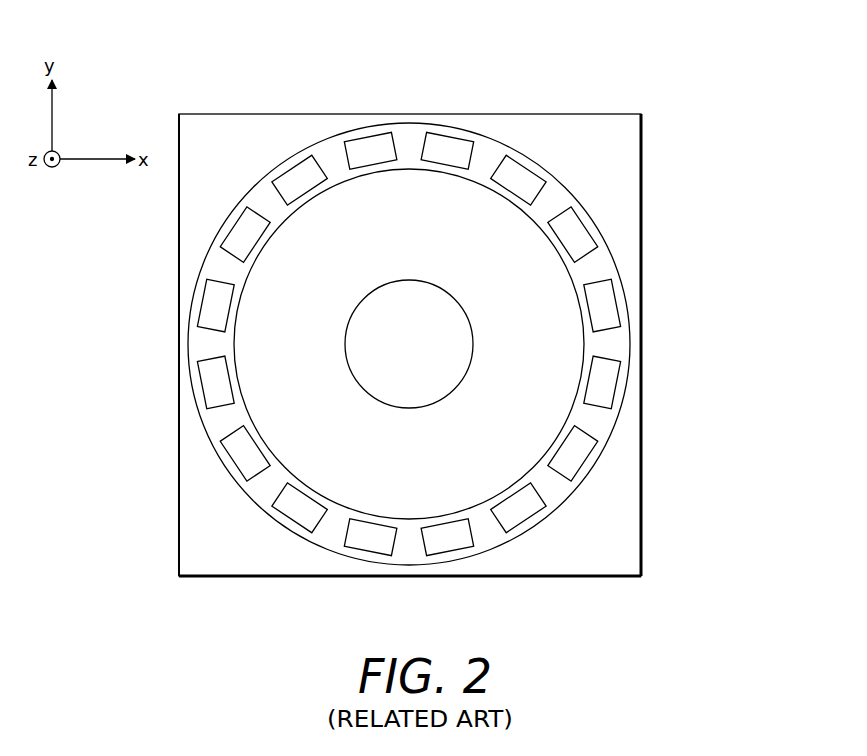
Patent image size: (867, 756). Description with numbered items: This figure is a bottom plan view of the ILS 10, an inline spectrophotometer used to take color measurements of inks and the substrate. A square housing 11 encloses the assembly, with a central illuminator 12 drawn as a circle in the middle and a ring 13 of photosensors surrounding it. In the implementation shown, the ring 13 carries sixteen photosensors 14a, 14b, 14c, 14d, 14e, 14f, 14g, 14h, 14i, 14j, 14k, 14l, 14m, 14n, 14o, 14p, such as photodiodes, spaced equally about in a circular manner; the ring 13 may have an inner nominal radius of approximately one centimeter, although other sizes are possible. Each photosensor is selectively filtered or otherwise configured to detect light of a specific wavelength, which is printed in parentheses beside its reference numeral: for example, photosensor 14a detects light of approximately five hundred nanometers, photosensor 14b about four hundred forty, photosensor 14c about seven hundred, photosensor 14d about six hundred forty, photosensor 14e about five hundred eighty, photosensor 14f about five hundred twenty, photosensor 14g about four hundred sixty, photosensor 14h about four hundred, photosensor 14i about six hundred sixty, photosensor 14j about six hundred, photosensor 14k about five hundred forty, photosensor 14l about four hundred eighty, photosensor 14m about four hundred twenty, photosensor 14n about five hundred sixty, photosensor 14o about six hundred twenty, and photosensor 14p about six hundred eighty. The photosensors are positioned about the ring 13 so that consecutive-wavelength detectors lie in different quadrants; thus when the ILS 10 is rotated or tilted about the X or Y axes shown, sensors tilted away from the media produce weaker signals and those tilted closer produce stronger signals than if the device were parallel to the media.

The ILS 10 is at (242, 46).
The housing 11 is at (621, 559).
The illuminator 12 is at (421, 359).
The ring 13 is at (559, 188).
The photosensor 14a is at (526, 171).
The photosensor 14b is at (583, 223).
The photosensor 14c is at (615, 306).
The photosensor 14d is at (615, 378).
The photosensor 14e is at (589, 452).
The photosensor 14f is at (540, 512).
The photosensor 14g is at (446, 551).
The photosensor 14h is at (374, 551).
The photosensor 14i is at (277, 517).
The photosensor 14j is at (233, 462).
The photosensor 14k is at (205, 378).
The photosensor 14l is at (205, 312).
The photosensor 14m is at (235, 229).
The photosensor 14n is at (289, 170).
The photosensor 14o is at (371, 137).
The photosensor 14p is at (448, 137).